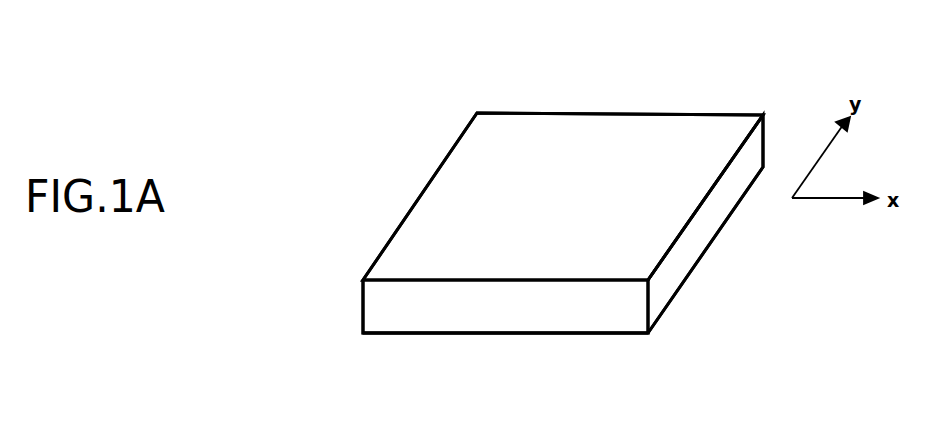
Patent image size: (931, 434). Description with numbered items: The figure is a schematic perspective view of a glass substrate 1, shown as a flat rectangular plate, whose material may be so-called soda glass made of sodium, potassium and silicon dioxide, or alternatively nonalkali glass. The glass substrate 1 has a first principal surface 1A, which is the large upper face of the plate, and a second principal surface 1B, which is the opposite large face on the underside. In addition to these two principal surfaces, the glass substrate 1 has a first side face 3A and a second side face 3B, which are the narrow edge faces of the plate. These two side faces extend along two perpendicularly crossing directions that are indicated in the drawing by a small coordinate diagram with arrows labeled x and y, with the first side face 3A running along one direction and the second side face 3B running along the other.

The glass substrate 1 is at (521, 111).
The first principal surface 1A is at (635, 134).
The second principal surface 1B is at (407, 343).
The first side face 3A is at (588, 313).
The second side face 3B is at (714, 226).